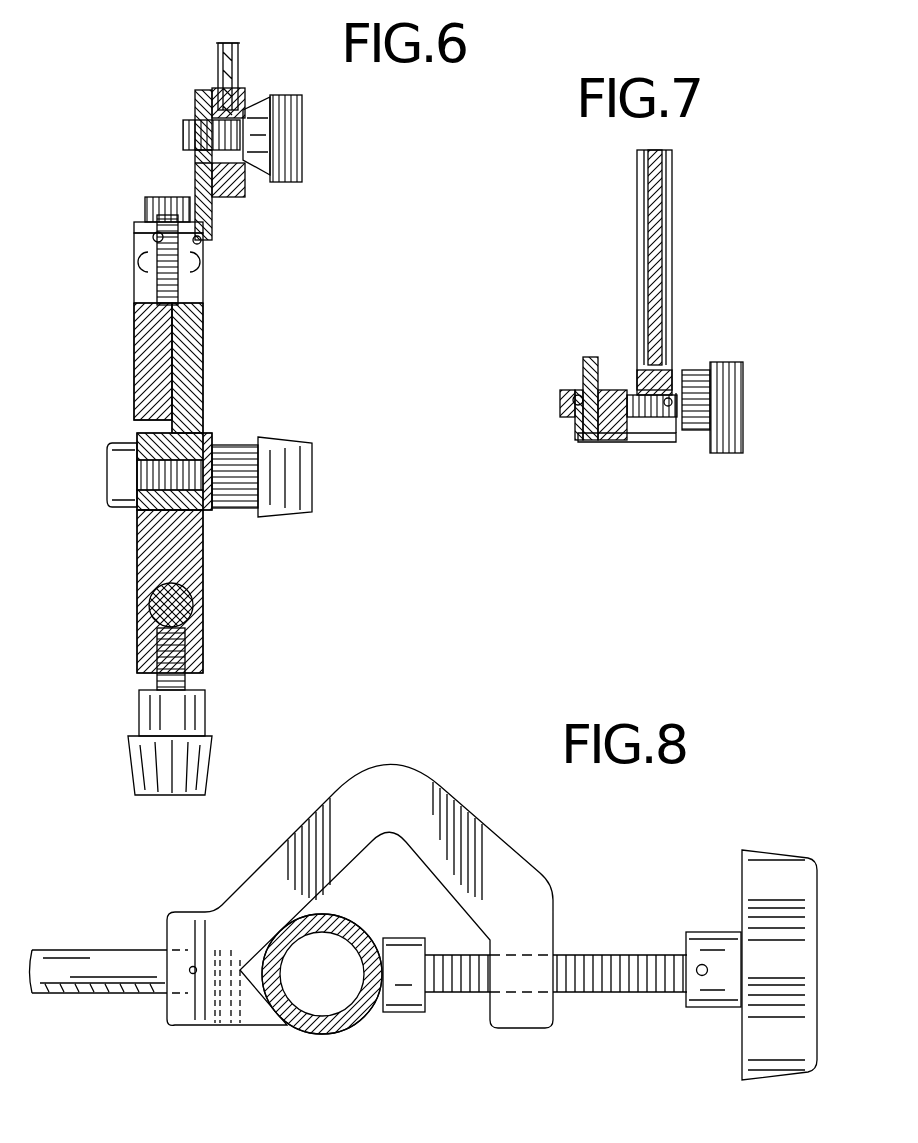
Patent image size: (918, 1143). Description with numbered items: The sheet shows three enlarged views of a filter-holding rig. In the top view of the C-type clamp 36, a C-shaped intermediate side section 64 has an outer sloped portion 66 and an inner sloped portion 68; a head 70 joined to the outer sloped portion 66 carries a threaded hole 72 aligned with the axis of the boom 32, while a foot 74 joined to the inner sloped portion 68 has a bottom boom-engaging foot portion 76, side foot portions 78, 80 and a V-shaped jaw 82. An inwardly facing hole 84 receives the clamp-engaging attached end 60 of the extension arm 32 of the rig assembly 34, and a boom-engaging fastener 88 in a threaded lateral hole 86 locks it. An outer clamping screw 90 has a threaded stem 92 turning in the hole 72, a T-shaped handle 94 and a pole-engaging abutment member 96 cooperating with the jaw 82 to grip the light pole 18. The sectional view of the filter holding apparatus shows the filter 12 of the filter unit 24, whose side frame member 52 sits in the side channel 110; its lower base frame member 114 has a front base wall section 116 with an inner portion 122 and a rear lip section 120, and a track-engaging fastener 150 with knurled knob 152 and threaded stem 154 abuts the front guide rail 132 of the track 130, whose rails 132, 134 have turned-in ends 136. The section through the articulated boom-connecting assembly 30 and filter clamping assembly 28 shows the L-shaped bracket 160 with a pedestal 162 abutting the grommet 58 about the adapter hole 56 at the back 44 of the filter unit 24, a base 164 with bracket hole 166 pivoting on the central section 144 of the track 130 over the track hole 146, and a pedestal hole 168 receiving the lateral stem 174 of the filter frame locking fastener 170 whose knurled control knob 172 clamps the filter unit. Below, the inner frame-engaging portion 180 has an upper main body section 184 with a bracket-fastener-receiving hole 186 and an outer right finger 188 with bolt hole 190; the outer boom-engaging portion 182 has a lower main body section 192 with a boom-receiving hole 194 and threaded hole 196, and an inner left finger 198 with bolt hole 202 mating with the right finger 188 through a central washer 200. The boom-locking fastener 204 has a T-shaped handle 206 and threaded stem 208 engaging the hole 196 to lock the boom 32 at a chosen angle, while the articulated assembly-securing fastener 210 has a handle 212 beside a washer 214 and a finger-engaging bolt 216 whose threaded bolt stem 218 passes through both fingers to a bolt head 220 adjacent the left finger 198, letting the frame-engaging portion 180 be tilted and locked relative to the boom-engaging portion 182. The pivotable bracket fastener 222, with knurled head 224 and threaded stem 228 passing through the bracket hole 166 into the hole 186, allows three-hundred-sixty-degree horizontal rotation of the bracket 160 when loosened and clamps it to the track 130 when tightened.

In FIG. 6, the filter 12 is at (229, 44).
In FIG. 7, the filter 12 is at (645, 167).
In FIG. 7, the light pole 18 is at (625, 444).
In FIG. 8, the light pole 18 is at (335, 1032).
In FIG. 6, the filter unit 24 is at (243, 60).
In FIG. 7, the filter unit 24 is at (663, 203).
In FIG. 6, the filter clamping assembly 28 is at (192, 127).
In FIG. 6, the articulated boom-connecting adjustment unit and assembly 30 is at (207, 387).
In FIG. 6, the extension arm 32 is at (160, 607).
In FIG. 8, the extension arm 32 is at (55, 955).
In FIG. 6, the rig assembly 34 is at (210, 158).
In FIG. 8, the rig assembly 34 is at (165, 995).
In FIG. 8, the C-type clamp 36 is at (421, 777).
In FIG. 6, the back 44 is at (218, 56).
In FIG. 7, the side frame member 52 is at (660, 322).
In FIG. 6, the adapter hole 56 is at (257, 138).
In FIG. 6, the grommet 58 is at (245, 192).
In FIG. 8, the clamp-engaging attached end 60 is at (163, 950).
In FIG. 8, the C-shaped intermediate side section 64 is at (377, 765).
In FIG. 8, the outer sloped portion 66 is at (505, 848).
In FIG. 8, the inner sloped portion 68 is at (295, 835).
In FIG. 8, the head 70 is at (556, 1017).
In FIG. 8, the threaded hole 72 is at (542, 950).
In FIG. 8, the foot 74 is at (185, 925).
In FIG. 8, the bottom boom-engaging foot portion 76 is at (165, 966).
In FIG. 8, the side foot portion 78 is at (205, 912).
In FIG. 8, the side foot portion 80 is at (213, 1030).
In FIG. 8, the V-shaped jaw 82 is at (268, 986).
In FIG. 8, the inwardly facing hole 84 is at (200, 993).
In FIG. 8, the threaded lateral slot or hole 86 is at (195, 975).
In FIG. 8, the boom-engaging fastener 88 is at (197, 968).
In FIG. 8, the outer clamping screw 90 is at (686, 995).
In FIG. 8, the threaded stem 92 is at (610, 950).
In FIG. 8, the handle 94 is at (745, 1040).
In FIG. 8, the pole-engaging abutment member 96 is at (400, 1014).
In FIG. 6, the side channel 110 is at (247, 100).
In FIG. 7, the side channel 110 is at (674, 252).
In FIG. 6, the lower base frame member 114 is at (225, 200).
In FIG. 7, the front base wall section 116 is at (665, 393).
In FIG. 7, the rear wall lip section 120 is at (572, 410).
In FIG. 7, the inner portion 122 is at (670, 405).
In FIG. 6, the track 130 is at (135, 262).
In FIG. 7, the track 130 is at (560, 442).
In FIG. 7, the front guide rail 132 is at (607, 444).
In FIG. 7, the rear guide rail 134 is at (560, 405).
In FIG. 7, the ball 136 is at (578, 394).
In FIG. 6, the central section 144 is at (200, 242).
In FIG. 6, the track hole 146 is at (198, 255).
In FIG. 7, the track hole 146 is at (580, 398).
In FIG. 7, the track-engaging and locking fastener 150 is at (744, 432).
In FIG. 7, the knurled track-securing knob 152 is at (724, 453).
In FIG. 7, the threaded stem 154 is at (632, 392).
In FIG. 6, the L-shaped bracket 160 is at (200, 230).
In FIG. 6, the pedestal 162 is at (195, 95).
In FIG. 6, the base 164 is at (150, 229).
In FIG. 6, the bracket hole 166 is at (153, 238).
In FIG. 6, the pedestal hole 168 is at (190, 112).
In FIG. 6, the filter frame locking fastener 170 is at (302, 150).
In FIG. 6, the knurled control knob 172 is at (292, 183).
In FIG. 6, the threaded lateral stem 174 is at (185, 135).
In FIG. 6, the inner frame-engaging portion 180 is at (205, 348).
In FIG. 6, the outer boom-engaging portion 182 is at (137, 557).
In FIG. 6, the upper main body section 184 is at (148, 340).
In FIG. 6, the bracket-fastener-receiving hole 186 is at (155, 290).
In FIG. 6, the outer right finger 188 is at (200, 515).
In FIG. 6, the bolt hole 190 is at (205, 440).
In FIG. 6, the lower main body section 192 is at (190, 560).
In FIG. 6, the boom-receiving hole 194 is at (193, 607).
In FIG. 6, the threaded hole 196 is at (160, 657).
In FIG. 6, the inner left finger 198 is at (137, 428).
In FIG. 6, the central washer 200 is at (170, 500).
In FIG. 6, the bolt hole 202 is at (140, 455).
In FIG. 6, the boom-locking fastener 204 is at (145, 790).
In FIG. 6, the boom securing handle 206 is at (207, 753).
In FIG. 6, the threaded stem 208 is at (185, 680).
In FIG. 6, the articulated assembly-securing fastener 210 is at (314, 474).
In FIG. 6, the articulated assembly-securing handle 212 is at (300, 514).
In FIG. 6, the washer 214 is at (220, 447).
In FIG. 6, the finger-engaging bolt 216 is at (110, 465).
In FIG. 6, the threaded bolt stem 218 is at (220, 472).
In FIG. 6, the bolt head 220 is at (118, 483).
In FIG. 6, the pivotable bracket fastener 222 is at (165, 198).
In FIG. 6, the knurled head 224 is at (148, 204).
In FIG. 6, the threaded stem 228 is at (180, 290).